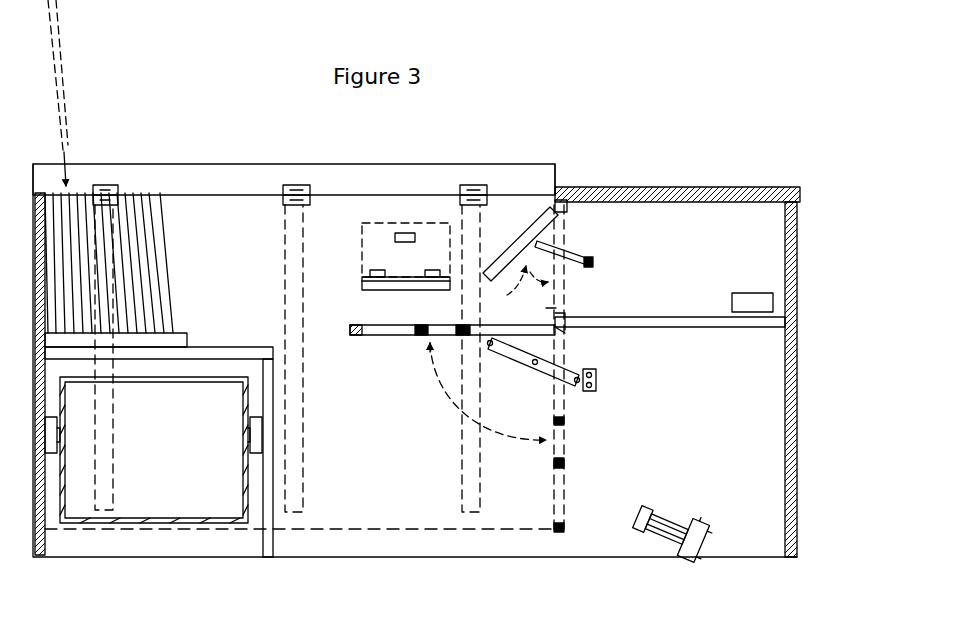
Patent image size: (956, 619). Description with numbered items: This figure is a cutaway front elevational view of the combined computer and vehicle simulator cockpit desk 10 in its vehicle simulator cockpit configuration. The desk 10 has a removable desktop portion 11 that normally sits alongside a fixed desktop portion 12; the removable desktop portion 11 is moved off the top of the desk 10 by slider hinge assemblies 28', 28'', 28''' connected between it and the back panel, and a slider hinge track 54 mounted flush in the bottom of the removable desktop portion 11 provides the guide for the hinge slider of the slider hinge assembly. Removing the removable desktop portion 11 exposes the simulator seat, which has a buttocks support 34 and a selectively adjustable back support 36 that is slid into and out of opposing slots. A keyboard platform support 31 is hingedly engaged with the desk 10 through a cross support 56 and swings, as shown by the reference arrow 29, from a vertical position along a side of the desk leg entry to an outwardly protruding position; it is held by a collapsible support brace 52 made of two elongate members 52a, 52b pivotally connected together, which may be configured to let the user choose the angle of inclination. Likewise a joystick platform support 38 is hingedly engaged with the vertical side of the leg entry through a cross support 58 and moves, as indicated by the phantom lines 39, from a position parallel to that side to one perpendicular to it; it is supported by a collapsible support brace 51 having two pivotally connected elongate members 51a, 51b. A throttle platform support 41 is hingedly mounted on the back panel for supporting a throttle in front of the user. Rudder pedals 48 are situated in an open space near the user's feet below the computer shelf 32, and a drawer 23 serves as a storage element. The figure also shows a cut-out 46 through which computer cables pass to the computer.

The combined computer and vehicle simulator cockpit desk 10 is at (760, 147).
The removable desktop portion 11 is at (385, 180).
The fixed desktop portion 12 is at (656, 186).
The drawer 23 is at (240, 418).
The slider hinge assembly 28' is at (121, 326).
The slider hinge assembly 28'' is at (314, 172).
The slider hinge assembly 28''' is at (500, 326).
The reference arrow 29 is at (520, 297).
The keyboard platform support 31 is at (495, 260).
The computer shelf 32 is at (738, 330).
The buttocks support 34 is at (258, 346).
The back support 36 is at (60, 80).
The joystick platform support 38 is at (418, 338).
The phantom lines 39 is at (445, 410).
The throttle platform support 41 is at (362, 285).
The cut-out 46 is at (756, 300).
The rudder pedals 48 is at (658, 512).
The collapsible support brace 51 is at (575, 384).
The elongate member 51a is at (520, 362).
The elongate member 51b is at (597, 378).
The collapsible support brace 52 is at (596, 266).
The elongate member 52a is at (553, 240).
The elongate member 52b is at (592, 262).
The slider hinge track 54 is at (283, 244).
The cross support 56 is at (564, 200).
The cross support 58 is at (562, 322).